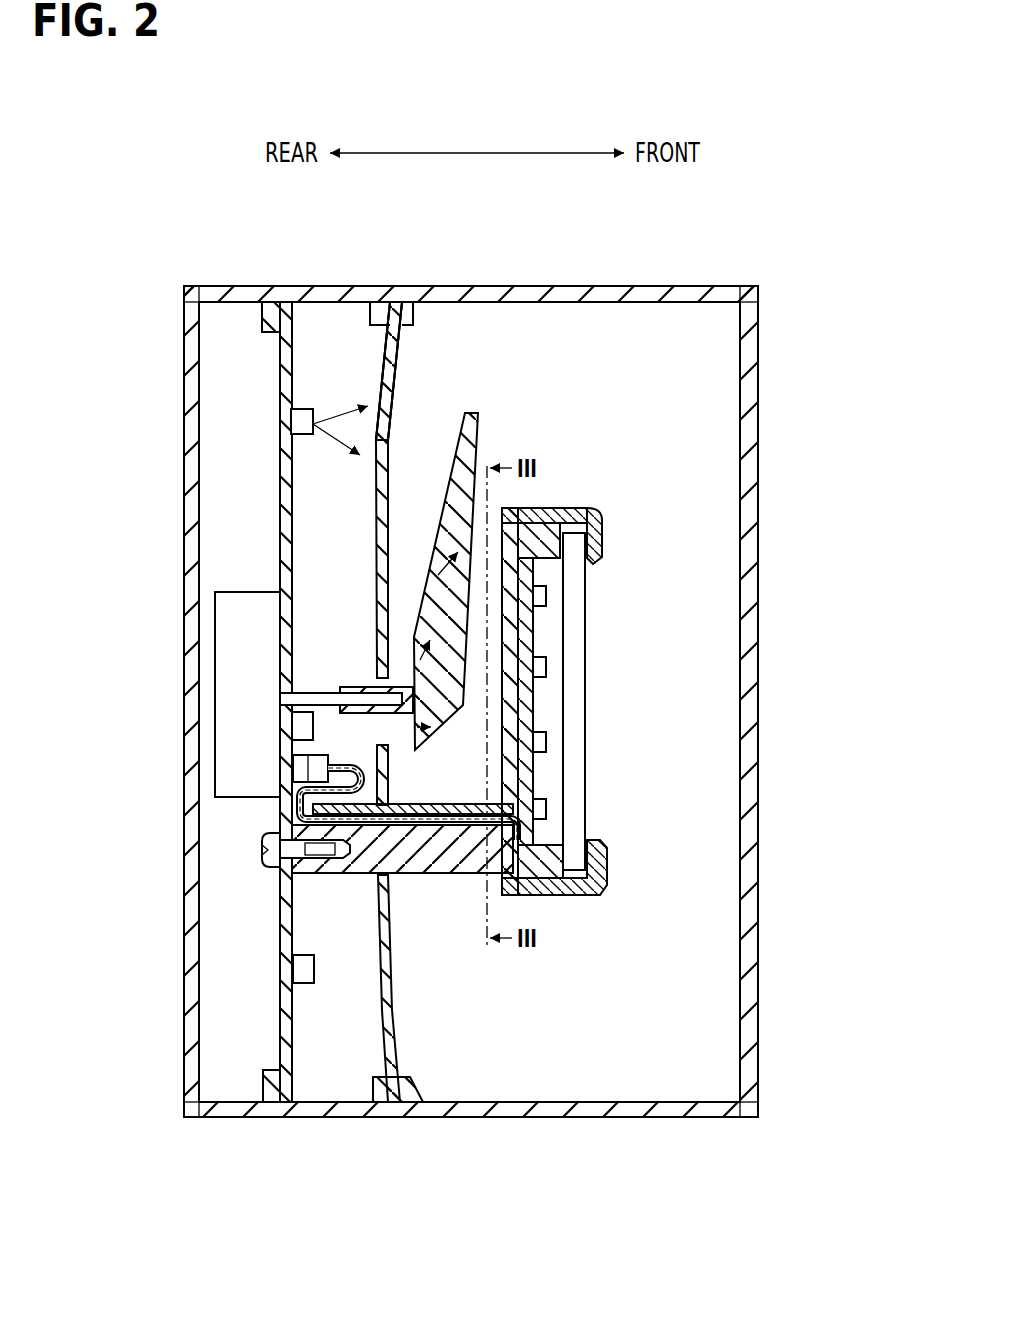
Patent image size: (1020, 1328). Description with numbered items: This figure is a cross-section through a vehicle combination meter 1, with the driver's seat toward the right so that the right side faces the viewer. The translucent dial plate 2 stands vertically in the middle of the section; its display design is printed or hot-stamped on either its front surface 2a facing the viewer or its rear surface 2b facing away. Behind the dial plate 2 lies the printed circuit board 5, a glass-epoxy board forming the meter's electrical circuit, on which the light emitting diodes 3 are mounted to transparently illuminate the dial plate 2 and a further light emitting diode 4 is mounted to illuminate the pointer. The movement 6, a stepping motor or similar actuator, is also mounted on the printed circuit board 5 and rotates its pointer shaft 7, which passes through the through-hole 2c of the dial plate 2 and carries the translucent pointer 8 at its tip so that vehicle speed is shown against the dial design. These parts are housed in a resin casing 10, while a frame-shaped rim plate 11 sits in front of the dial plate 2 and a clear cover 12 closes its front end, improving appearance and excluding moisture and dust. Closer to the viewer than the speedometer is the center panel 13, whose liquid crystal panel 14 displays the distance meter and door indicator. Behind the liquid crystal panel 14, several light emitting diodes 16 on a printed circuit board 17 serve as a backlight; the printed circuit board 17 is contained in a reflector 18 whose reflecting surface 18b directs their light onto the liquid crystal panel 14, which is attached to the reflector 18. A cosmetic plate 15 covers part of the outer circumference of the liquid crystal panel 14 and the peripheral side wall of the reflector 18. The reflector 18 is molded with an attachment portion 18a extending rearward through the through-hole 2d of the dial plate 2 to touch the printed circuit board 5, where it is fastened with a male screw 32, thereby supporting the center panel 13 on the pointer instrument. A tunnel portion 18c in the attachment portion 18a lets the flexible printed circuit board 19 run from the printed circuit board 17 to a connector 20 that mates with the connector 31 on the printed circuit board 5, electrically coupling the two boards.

The combination meter 1 is at (118, 106).
The dial plate 2 is at (394, 411).
The front surface 2a is at (393, 373).
The rear surface 2b is at (393, 373).
The through-hole 2c is at (300, 725).
The through-hole 2d is at (345, 868).
The light emitting diodes 3 is at (293, 409).
The light emitting diode 4 is at (291, 712).
The printed circuit board 5 is at (290, 372).
The movement 6 is at (215, 608).
The pointer shaft 7 is at (317, 690).
The pointer 8 is at (480, 430).
The casing 10 is at (369, 1117).
The rim plate 11 is at (715, 1118).
The clear cover 12 is at (758, 1067).
The center panel 13 is at (862, 488).
The liquid crystal panel 14 is at (590, 583).
The cosmetic plate 15 is at (605, 534).
The light emitting diodes 16 is at (547, 667).
The printed circuit board 17 is at (547, 623).
The reflector 18 is at (566, 518).
The attachment portion 18a is at (445, 802).
The reflecting surface 18b is at (592, 803).
The tunnel portion 18c is at (468, 804).
The flexible printed circuit board 19 is at (300, 821).
The connector 20 is at (300, 788).
The connector 31 is at (300, 767).
The screw 32 is at (262, 849).